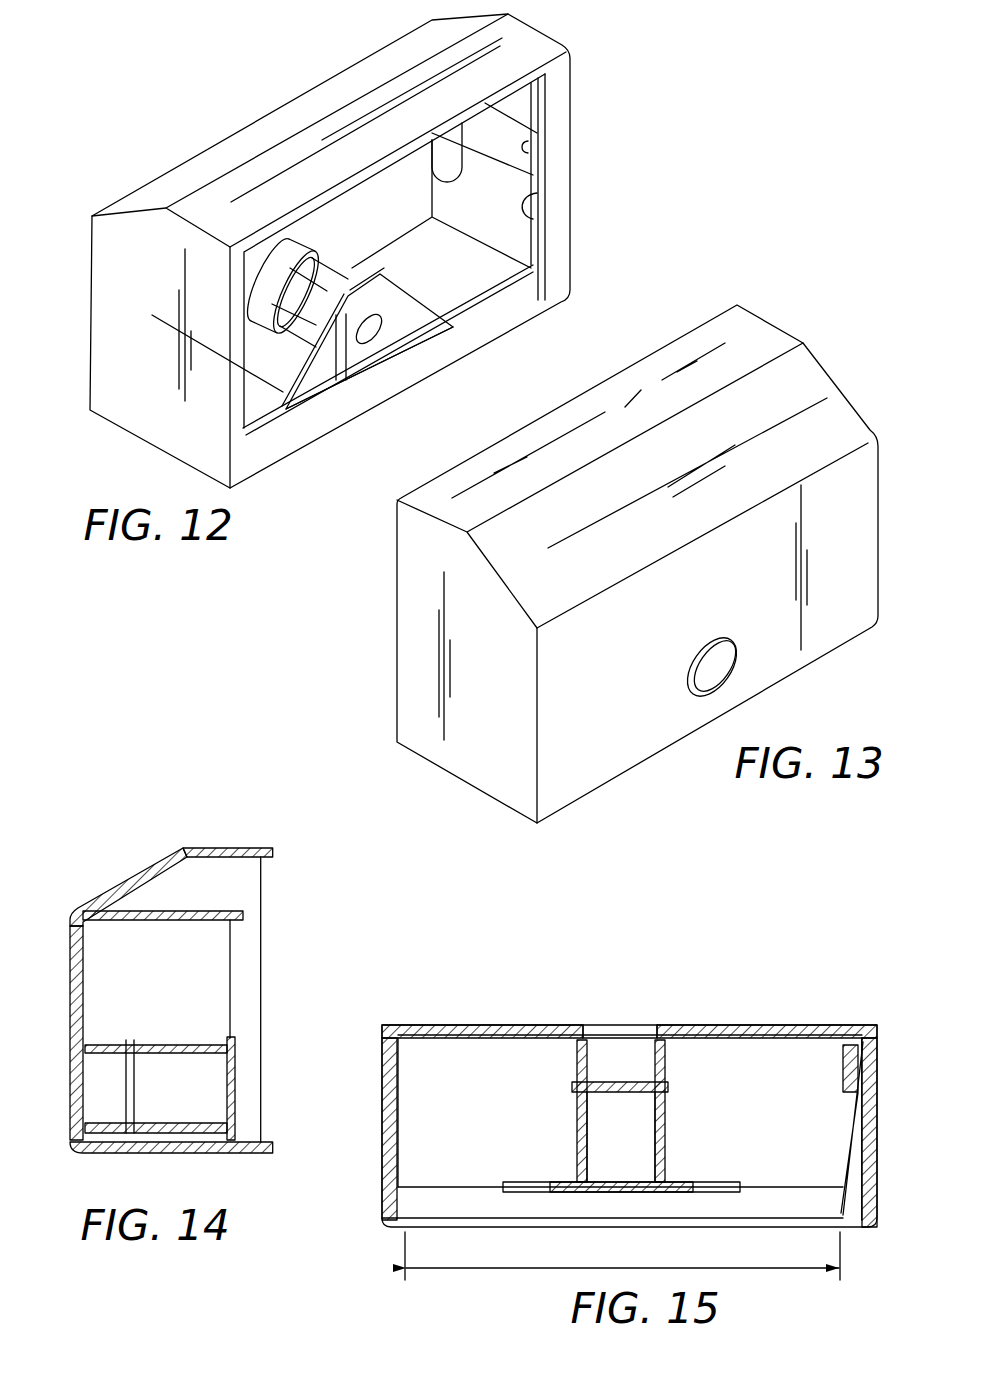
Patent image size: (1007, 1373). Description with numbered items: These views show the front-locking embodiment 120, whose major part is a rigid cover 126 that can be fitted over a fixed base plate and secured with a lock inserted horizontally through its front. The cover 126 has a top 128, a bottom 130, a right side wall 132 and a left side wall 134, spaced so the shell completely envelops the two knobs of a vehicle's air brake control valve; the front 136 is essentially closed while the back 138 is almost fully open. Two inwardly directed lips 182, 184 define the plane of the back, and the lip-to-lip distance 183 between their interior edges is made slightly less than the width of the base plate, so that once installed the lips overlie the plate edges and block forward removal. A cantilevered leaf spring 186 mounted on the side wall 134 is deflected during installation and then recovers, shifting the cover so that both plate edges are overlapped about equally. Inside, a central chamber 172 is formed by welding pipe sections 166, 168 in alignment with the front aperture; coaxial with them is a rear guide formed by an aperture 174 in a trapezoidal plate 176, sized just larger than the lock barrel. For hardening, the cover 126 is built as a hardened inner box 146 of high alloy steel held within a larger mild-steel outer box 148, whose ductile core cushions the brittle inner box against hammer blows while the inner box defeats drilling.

In FIG. 12, the front-locking embodiment 120 is at (604, 41).
In FIG. 13, the front-locking embodiment 120 is at (387, 657).
In FIG. 12, the rigid cover 126 is at (266, 112).
In FIG. 13, the rigid cover 126 is at (825, 353).
In FIG. 14, the rigid cover 126 is at (169, 844).
In FIG. 14, the top 128 is at (218, 847).
In FIG. 14, the bottom 130 is at (180, 1157).
In FIG. 12, the right side wall 132 is at (140, 385).
In FIG. 13, the left side wall 134 is at (463, 750).
In FIG. 13, the front 136 is at (614, 701).
In FIG. 12, the back 138 is at (537, 205).
In FIG. 14, the inner box 146 is at (202, 908).
In FIG. 15, the inner box 146 is at (398, 1072).
In FIG. 14, the outer box 148 is at (137, 870).
In FIG. 15, the outer box 148 is at (367, 1130).
In FIG. 12, the pipe section 166 is at (286, 235).
In FIG. 15, the pipe section 166 is at (667, 1060).
In FIG. 12, the pipe section 168 is at (302, 338).
In FIG. 15, the pipe section 168 is at (667, 1142).
In FIG. 12, the central chamber 172 is at (362, 265).
In FIG. 15, the central chamber 172 is at (574, 1135).
In FIG. 12, the aperture 174 is at (375, 345).
In FIG. 12, the trapezoidal plate 176 is at (415, 331).
In FIG. 12, the lip 182 is at (562, 270).
In FIG. 15, the lip 182 is at (850, 1232).
In FIG. 15, the lip-to-lip distance 183 is at (503, 1270).
In FIG. 12, the lip 184 is at (243, 420).
In FIG. 15, the lip 184 is at (396, 1223).
In FIG. 12, the cantilevered leaf spring 186 is at (527, 146).